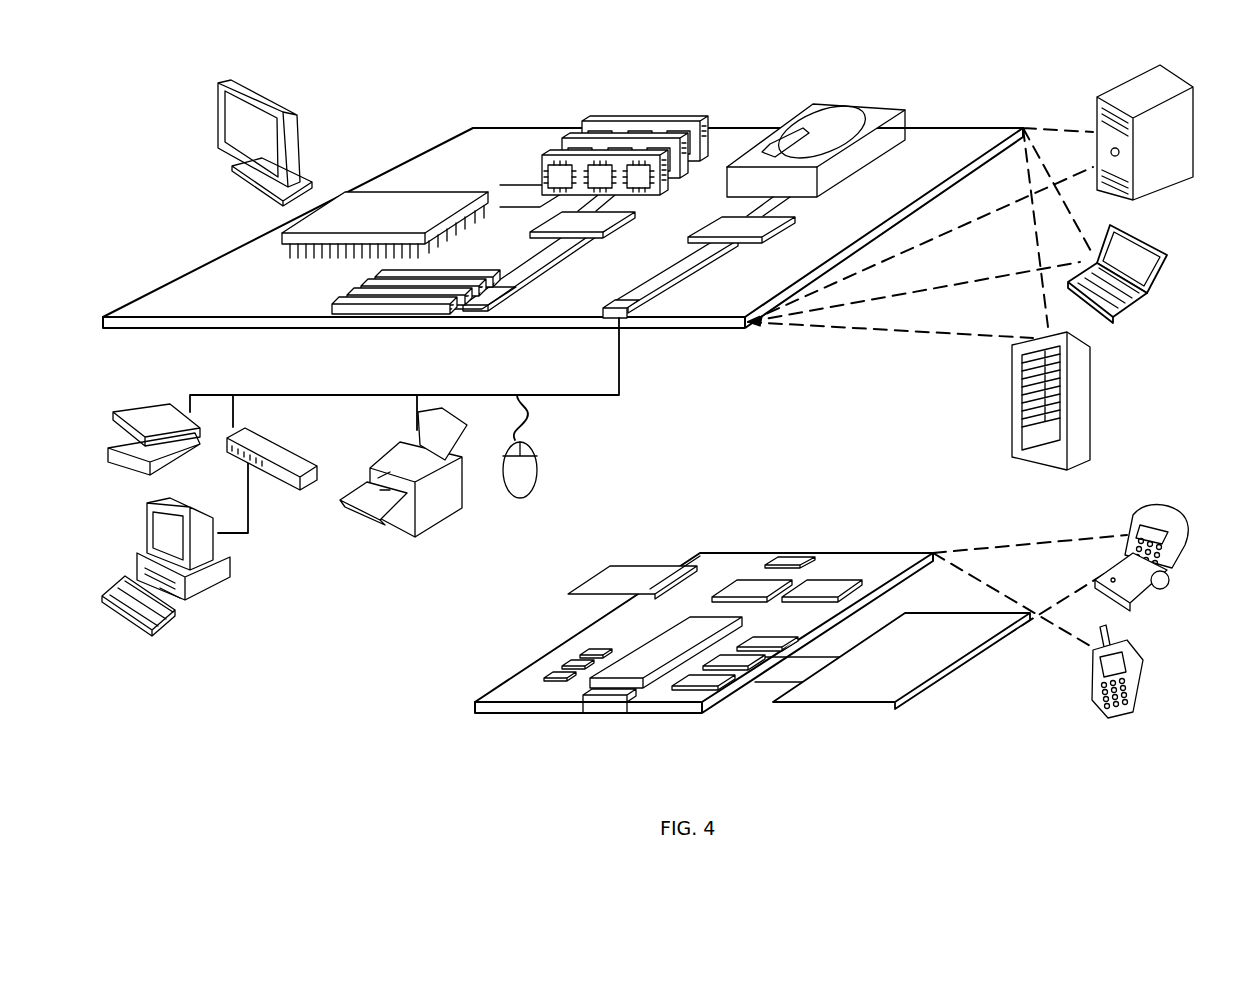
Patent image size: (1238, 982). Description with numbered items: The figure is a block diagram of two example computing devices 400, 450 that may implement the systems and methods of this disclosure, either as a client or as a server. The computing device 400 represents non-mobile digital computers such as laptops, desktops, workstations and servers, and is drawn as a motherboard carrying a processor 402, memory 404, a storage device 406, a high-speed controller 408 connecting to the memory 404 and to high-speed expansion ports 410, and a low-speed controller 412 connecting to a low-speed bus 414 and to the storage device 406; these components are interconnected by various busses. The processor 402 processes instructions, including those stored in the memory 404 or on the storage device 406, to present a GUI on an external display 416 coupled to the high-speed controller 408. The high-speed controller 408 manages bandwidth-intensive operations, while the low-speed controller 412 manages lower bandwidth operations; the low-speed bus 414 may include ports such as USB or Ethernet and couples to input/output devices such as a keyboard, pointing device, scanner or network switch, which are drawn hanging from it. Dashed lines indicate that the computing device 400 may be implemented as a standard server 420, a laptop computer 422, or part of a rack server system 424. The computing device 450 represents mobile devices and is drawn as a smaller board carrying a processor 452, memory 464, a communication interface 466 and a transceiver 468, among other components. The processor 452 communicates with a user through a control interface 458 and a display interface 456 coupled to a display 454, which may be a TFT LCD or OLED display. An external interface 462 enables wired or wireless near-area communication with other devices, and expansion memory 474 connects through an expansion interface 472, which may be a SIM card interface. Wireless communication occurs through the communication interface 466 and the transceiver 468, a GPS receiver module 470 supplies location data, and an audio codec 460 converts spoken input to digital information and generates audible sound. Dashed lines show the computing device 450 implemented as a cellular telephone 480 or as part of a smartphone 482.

The computing device 400 is at (403, 106).
The processor 402 is at (288, 237).
The memory 404 is at (588, 123).
The storage device 406 is at (808, 106).
The high-speed controller 408 is at (562, 224).
The high-speed expansion ports 410 is at (350, 292).
The low-speed controller 412 is at (721, 226).
The low-speed bus 414 is at (628, 320).
The display 416 is at (218, 85).
The standard server 420 is at (1097, 112).
The laptop computer 422 is at (1163, 250).
The rack server system 424 is at (1011, 426).
The computing device 450 is at (466, 709).
The processor 452 is at (640, 674).
The display 454 is at (860, 688).
The display interface 456 is at (710, 688).
The control interface 458 is at (745, 664).
The audio codec 460 is at (760, 646).
The external interface 462 is at (603, 706).
The memory 464 is at (575, 664).
The communication interface 466 is at (750, 592).
The transceiver 468 is at (822, 592).
The GPS receiver module 470 is at (794, 556).
The expansion interface 472 is at (673, 566).
The expansion memory 474 is at (608, 566).
The cellular telephone 480 is at (1136, 507).
The smartphone 482 is at (1093, 675).